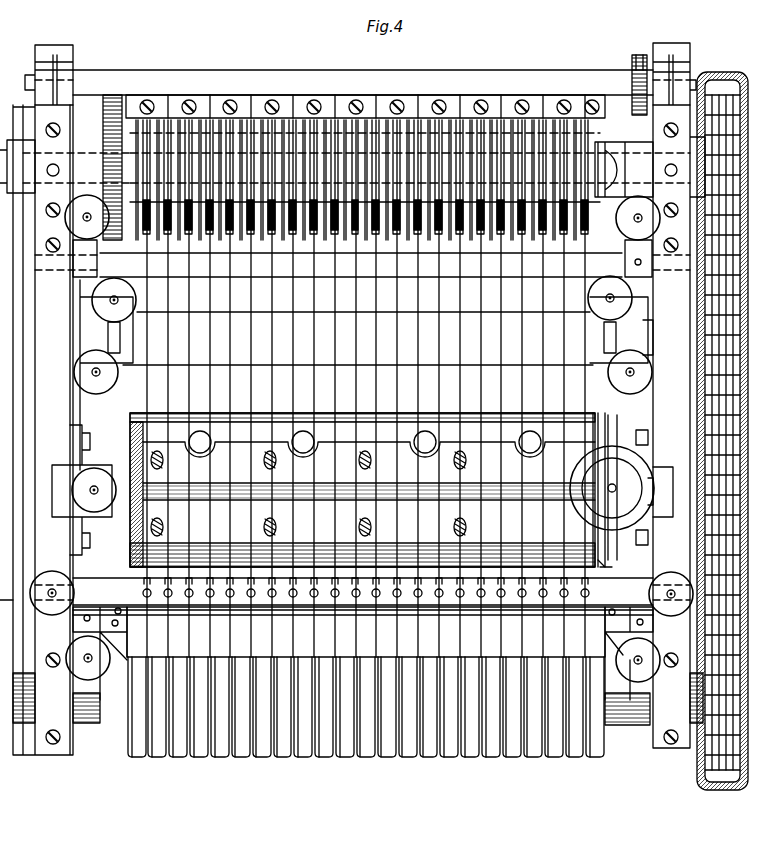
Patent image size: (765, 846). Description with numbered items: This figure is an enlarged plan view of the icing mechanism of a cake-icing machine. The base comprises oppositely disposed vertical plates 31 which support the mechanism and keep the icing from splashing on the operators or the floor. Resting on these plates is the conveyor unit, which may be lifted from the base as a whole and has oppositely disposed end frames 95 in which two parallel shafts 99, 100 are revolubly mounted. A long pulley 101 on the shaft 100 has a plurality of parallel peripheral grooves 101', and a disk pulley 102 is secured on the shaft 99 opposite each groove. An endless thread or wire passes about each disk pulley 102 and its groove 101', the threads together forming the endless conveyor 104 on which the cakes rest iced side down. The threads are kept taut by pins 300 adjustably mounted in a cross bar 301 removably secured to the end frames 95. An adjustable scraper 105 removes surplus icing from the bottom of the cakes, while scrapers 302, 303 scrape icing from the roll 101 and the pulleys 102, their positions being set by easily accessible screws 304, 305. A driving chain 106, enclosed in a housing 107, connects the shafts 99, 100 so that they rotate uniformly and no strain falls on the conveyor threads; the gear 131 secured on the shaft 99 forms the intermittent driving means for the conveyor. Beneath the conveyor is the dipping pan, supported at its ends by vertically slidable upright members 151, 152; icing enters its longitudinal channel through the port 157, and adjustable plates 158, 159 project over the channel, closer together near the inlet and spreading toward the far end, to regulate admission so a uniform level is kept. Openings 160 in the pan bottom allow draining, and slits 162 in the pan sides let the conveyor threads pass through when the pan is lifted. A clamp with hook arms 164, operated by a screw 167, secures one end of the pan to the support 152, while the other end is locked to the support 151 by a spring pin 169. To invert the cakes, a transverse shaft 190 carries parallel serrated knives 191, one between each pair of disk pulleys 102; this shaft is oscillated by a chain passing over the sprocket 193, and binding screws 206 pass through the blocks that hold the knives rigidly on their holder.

The vertical plates 31 is at (48, 757).
The end frames 95 is at (55, 412).
The shaft 99 is at (622, 175).
The shaft 100 is at (112, 705).
The long pulley 101 is at (366, 698).
The peripheral grooves 101' is at (361, 726).
The disk pulley 102 is at (294, 117).
The endless conveyor 104 is at (349, 364).
The adjustable scraper 105 is at (150, 348).
The driving chain 106 is at (708, 413).
The housing 107 is at (718, 72).
The gear 131 is at (110, 95).
The upright member 151 is at (60, 505).
The upright member 152 is at (664, 516).
The port 157 is at (206, 490).
The adjustable plate 158 is at (369, 458).
The adjustable plate 159 is at (308, 522).
The openings 160 is at (200, 450).
The slits or notches 162 is at (272, 414).
The hook arms 164 is at (612, 560).
The screw 167 is at (612, 490).
The spring pin 169 is at (98, 505).
The transverse shaft 190 is at (610, 80).
The knives 191 is at (462, 125).
The sprocket 193 is at (640, 54).
The binding screws 206 is at (397, 102).
The pins 300 is at (418, 597).
The cross bar 301 is at (97, 595).
The scraper 302 is at (596, 625).
The scraper 303 is at (530, 253).
The screws 304 is at (80, 645).
The screws 305 is at (95, 235).